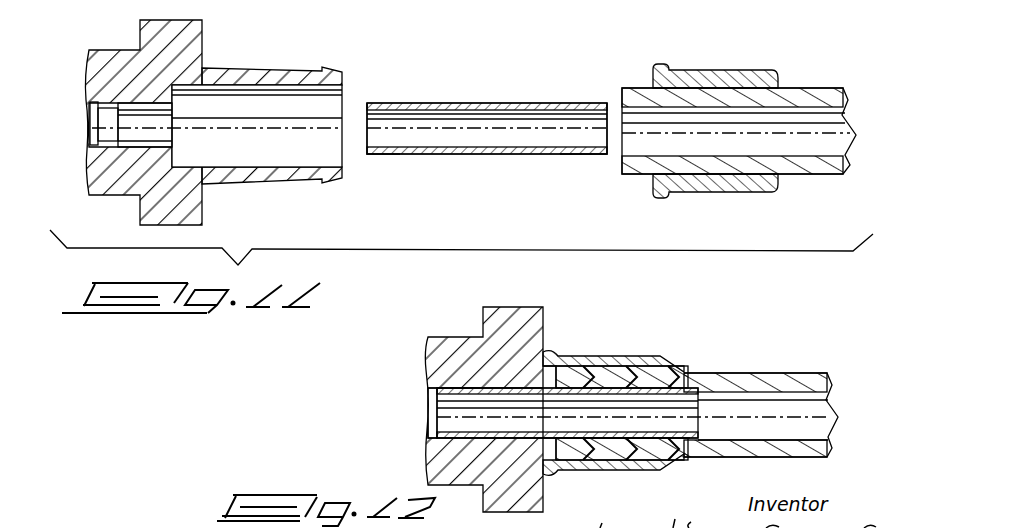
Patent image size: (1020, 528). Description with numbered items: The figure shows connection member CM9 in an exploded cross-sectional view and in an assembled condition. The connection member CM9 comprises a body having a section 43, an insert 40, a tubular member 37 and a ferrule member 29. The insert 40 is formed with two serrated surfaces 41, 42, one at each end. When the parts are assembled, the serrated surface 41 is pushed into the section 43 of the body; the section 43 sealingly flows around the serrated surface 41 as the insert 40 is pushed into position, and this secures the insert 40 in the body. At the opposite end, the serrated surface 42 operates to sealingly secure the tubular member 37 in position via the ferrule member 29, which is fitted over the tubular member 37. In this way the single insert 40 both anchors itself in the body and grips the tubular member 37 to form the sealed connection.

In FIG. 11, the ferrule member 29 is at (731, 75).
In FIG. 12, the ferrule member 29 is at (657, 474).
In FIG. 11, the tubular member 37 is at (816, 175).
In FIG. 12, the tubular member 37 is at (789, 376).
In FIG. 11, the insert 40 is at (457, 102).
In FIG. 12, the insert 40 is at (547, 440).
In FIG. 11, the serrated surface 41 is at (397, 154).
In FIG. 12, the serrated surface 41 is at (478, 388).
In FIG. 11, the serrated surface 42 is at (531, 155).
In FIG. 12, the serrated surface 42 is at (628, 452).
In FIG. 11, the section of the body 43 is at (123, 104).
In FIG. 11, the connection member CM9 is at (76, 210).
In FIG. 12, the connection member CM9 is at (627, 406).